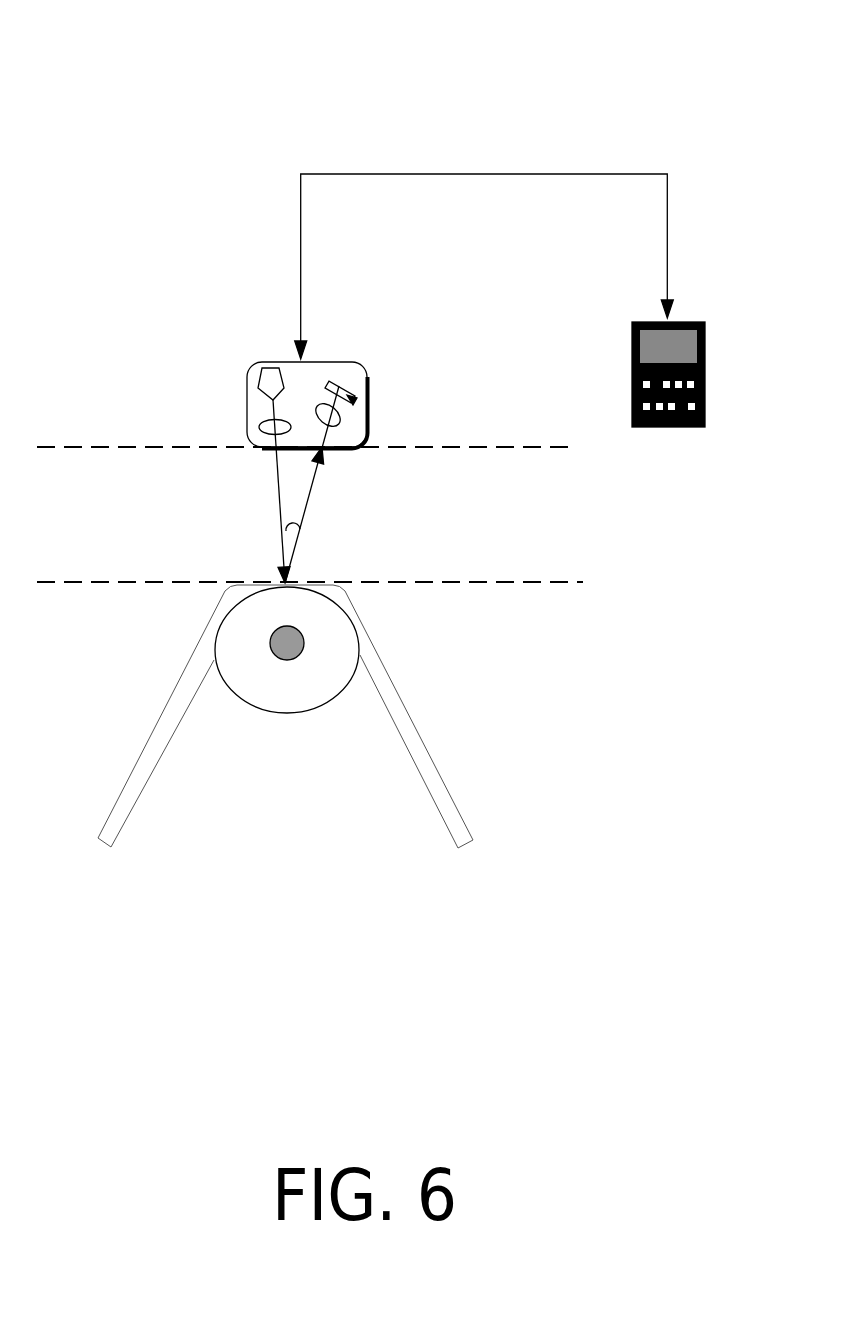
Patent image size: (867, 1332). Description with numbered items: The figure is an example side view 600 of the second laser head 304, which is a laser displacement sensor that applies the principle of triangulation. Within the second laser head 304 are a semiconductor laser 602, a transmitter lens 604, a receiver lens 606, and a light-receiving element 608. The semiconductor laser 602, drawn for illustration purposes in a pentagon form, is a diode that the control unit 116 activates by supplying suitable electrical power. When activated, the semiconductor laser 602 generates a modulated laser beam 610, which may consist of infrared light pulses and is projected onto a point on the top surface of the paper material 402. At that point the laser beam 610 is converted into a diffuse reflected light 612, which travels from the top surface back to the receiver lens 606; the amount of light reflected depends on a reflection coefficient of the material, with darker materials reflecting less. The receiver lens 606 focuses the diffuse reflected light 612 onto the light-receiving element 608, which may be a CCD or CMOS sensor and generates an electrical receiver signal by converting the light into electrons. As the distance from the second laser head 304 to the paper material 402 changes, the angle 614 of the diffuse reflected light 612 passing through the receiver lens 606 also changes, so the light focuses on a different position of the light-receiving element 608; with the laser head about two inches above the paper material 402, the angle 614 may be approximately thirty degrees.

The side view 600 is at (652, 46).
The second laser head 304 is at (336, 365).
The semiconductor laser 602 is at (258, 380).
The transmitter lens 604 is at (260, 421).
The light-receiving element 608 is at (357, 398).
The receiver lens 606 is at (341, 423).
The laser beam 610 is at (279, 487).
The diffuse reflected light 612 is at (310, 498).
The angle 614 is at (292, 545).
The paper material 402 is at (327, 590).
The control unit 116 is at (688, 490).